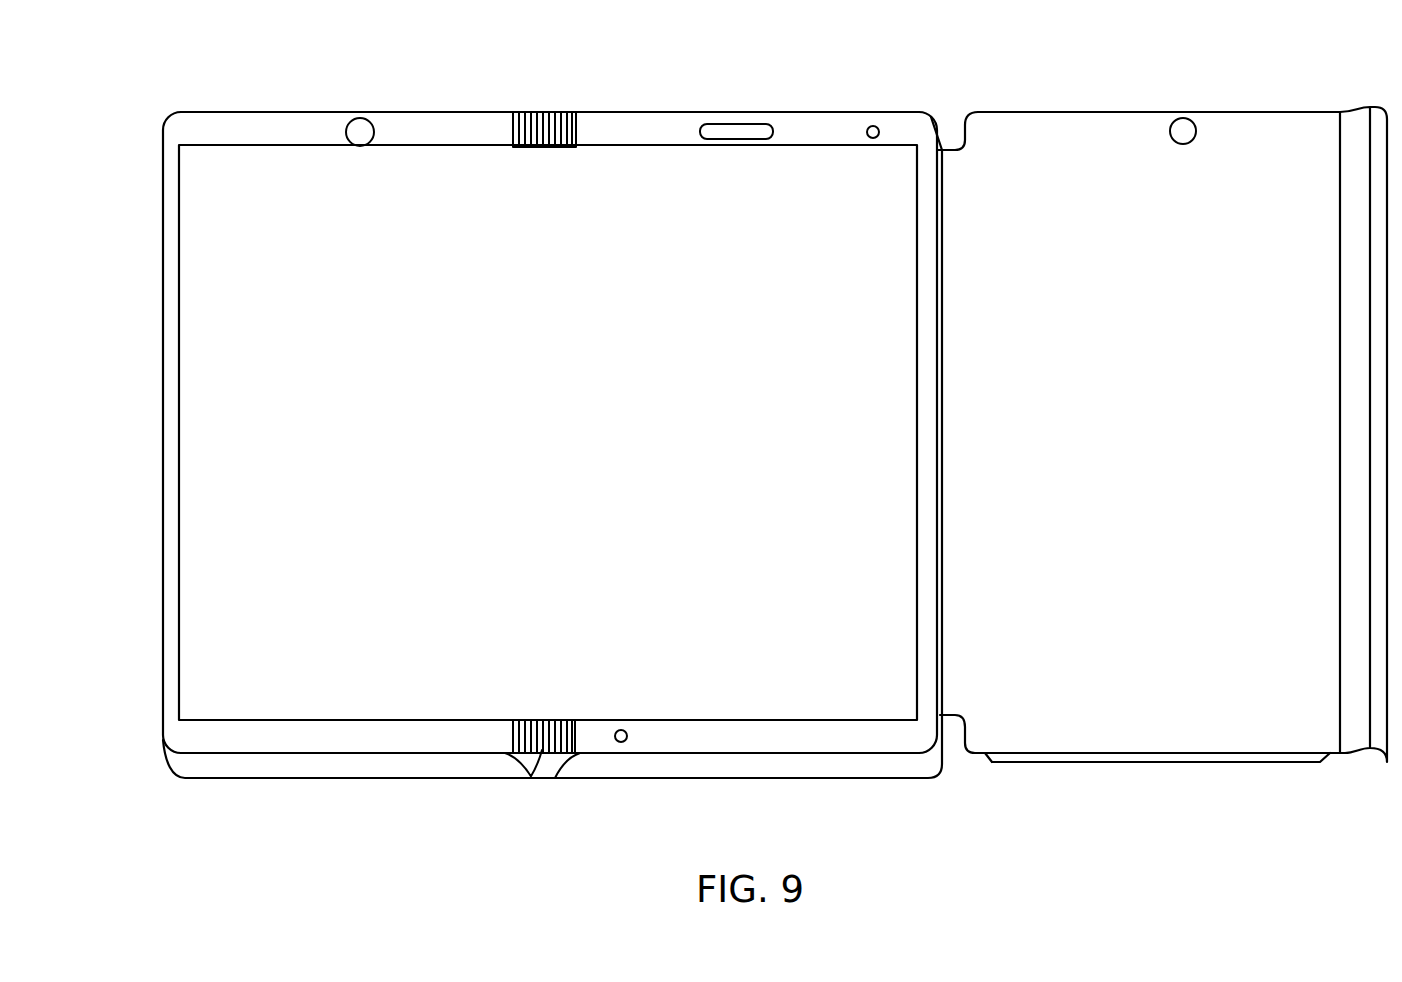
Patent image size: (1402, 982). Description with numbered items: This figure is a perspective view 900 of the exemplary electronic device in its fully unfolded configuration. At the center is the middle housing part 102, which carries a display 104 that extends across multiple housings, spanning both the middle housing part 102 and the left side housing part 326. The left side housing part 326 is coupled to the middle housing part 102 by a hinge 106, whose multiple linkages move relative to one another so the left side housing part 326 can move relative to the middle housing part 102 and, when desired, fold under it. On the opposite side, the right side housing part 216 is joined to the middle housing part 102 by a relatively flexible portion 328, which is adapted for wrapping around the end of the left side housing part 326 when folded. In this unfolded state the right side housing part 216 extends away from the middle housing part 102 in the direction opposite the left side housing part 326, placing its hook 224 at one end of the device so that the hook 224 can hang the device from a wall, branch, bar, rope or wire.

The perspective view 900 is at (1318, 70).
The middle housing part 102 is at (795, 737).
The display 104 is at (709, 694).
The hinge 106 is at (542, 748).
The left side housing part 326 is at (339, 739).
The relatively flexible portion 328 is at (963, 748).
The right side housing part 216 is at (1130, 740).
The hook 224 is at (1365, 753).